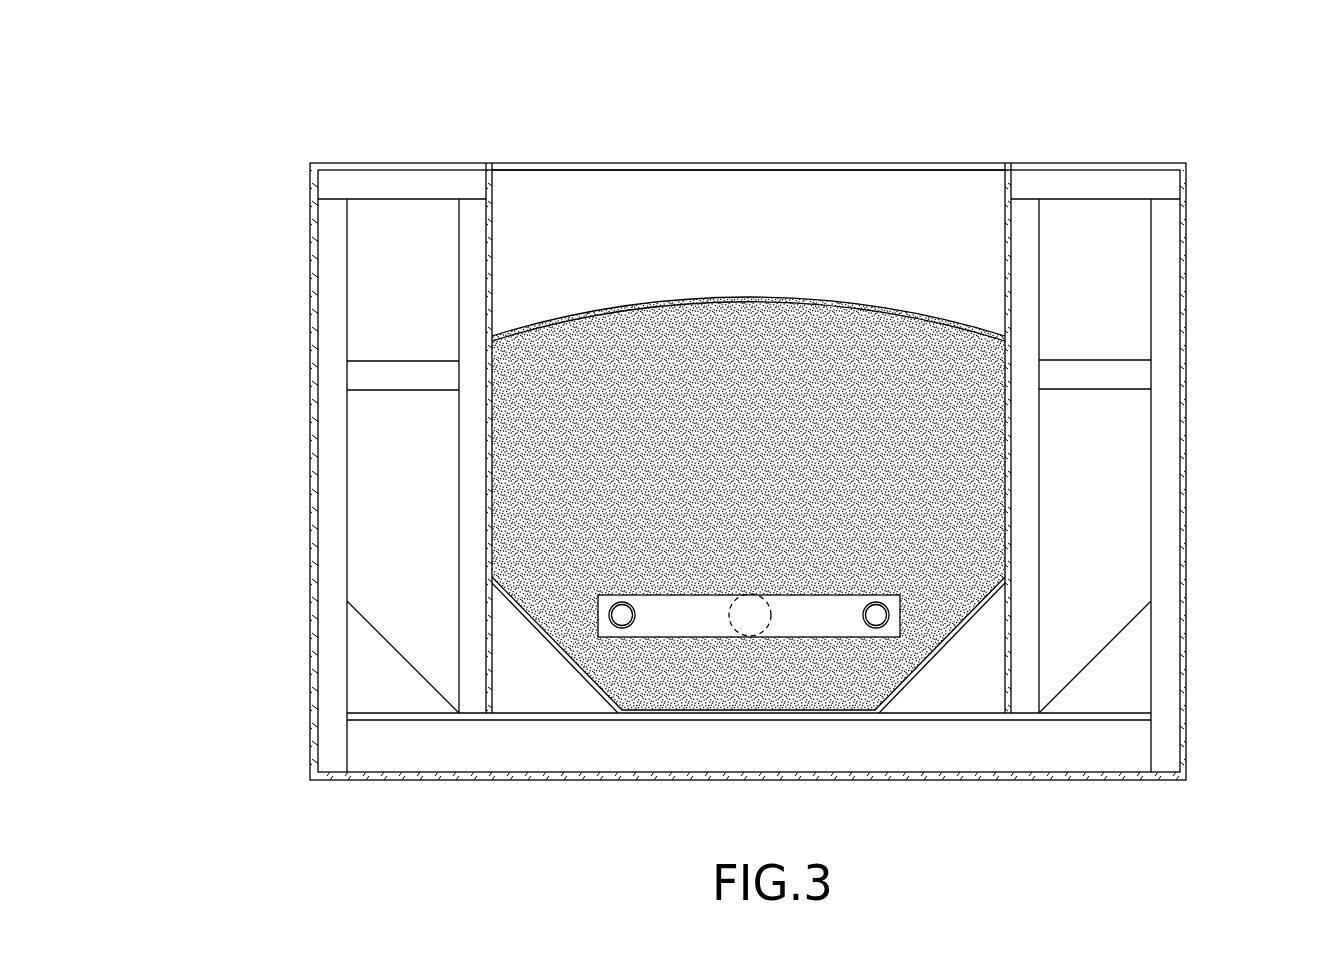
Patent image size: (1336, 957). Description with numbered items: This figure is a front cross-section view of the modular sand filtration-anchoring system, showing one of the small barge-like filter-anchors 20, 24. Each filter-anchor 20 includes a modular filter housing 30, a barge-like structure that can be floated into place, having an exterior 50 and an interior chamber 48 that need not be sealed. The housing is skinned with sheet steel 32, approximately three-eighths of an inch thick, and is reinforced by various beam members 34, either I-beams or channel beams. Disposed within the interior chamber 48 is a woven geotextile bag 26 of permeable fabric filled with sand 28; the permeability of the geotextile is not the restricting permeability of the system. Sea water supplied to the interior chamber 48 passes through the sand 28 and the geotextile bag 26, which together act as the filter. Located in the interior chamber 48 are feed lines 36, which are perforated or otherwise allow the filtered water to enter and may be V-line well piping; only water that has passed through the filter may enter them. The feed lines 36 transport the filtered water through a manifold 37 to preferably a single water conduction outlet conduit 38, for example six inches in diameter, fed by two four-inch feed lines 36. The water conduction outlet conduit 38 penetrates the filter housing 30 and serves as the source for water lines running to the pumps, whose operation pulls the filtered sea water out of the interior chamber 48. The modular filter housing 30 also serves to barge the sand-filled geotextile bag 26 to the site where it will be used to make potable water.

The filter-anchor 20 is at (930, 100).
The filter-anchor 24 is at (749, 716).
The woven geotextile bag 26 is at (790, 298).
The sand 28 is at (548, 380).
The modular filter housing 30 is at (1183, 425).
The sheet steel 32 is at (978, 190).
The beam members 34 is at (368, 741).
The feed lines 36 is at (622, 628).
The manifold 37 is at (658, 615).
The water conduction outlet conduit 38 is at (758, 618).
The interior chamber 48 is at (905, 673).
The exterior 50 is at (314, 343).